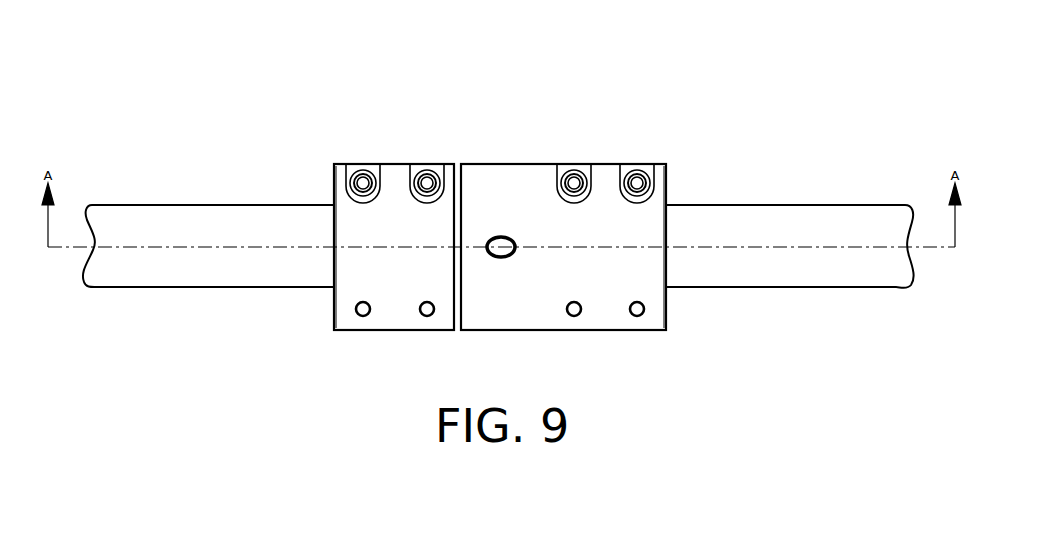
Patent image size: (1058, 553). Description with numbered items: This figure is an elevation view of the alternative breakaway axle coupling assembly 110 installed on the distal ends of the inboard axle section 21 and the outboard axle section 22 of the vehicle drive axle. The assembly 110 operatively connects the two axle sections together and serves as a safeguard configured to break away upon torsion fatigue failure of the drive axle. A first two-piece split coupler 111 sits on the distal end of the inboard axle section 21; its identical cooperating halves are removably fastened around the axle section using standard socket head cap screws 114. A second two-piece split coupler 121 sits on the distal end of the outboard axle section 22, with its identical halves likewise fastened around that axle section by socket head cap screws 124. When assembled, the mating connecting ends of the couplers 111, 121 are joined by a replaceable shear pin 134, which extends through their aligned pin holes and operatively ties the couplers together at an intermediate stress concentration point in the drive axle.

The breakaway axle coupling assembly 110 is at (688, 135).
The first two-piece split coupler 111 is at (523, 185).
The socket head cap screws 114 is at (635, 163).
The second two-piece split coupler 121 is at (348, 280).
The socket head cap screws 124 is at (425, 162).
The replaceable shear pin 134 is at (497, 258).
The inboard axle section 21 is at (795, 228).
The outboard axle section 22 is at (218, 227).